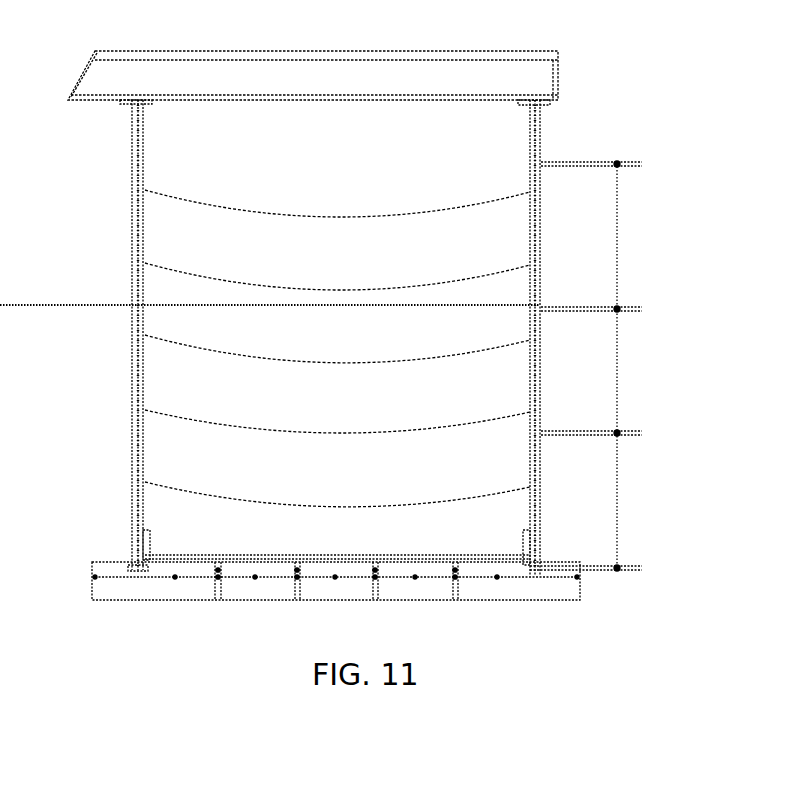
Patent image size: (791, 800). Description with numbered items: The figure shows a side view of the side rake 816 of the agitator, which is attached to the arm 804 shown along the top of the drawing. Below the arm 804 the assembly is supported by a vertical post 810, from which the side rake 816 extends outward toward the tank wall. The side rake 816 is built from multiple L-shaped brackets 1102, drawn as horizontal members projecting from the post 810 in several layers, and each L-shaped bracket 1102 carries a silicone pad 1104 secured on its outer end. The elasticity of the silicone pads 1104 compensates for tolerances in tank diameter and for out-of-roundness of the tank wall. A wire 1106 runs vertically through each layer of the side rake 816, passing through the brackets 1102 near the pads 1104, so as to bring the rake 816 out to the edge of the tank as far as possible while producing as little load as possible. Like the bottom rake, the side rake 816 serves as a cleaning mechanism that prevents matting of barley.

The arm 804 is at (557, 58).
The support post 810 is at (528, 168).
The side rake 816 is at (675, 580).
The L-shaped bracket 1102 is at (582, 165).
The silicone pad 1104 is at (648, 165).
The wire 1106 is at (617, 362).